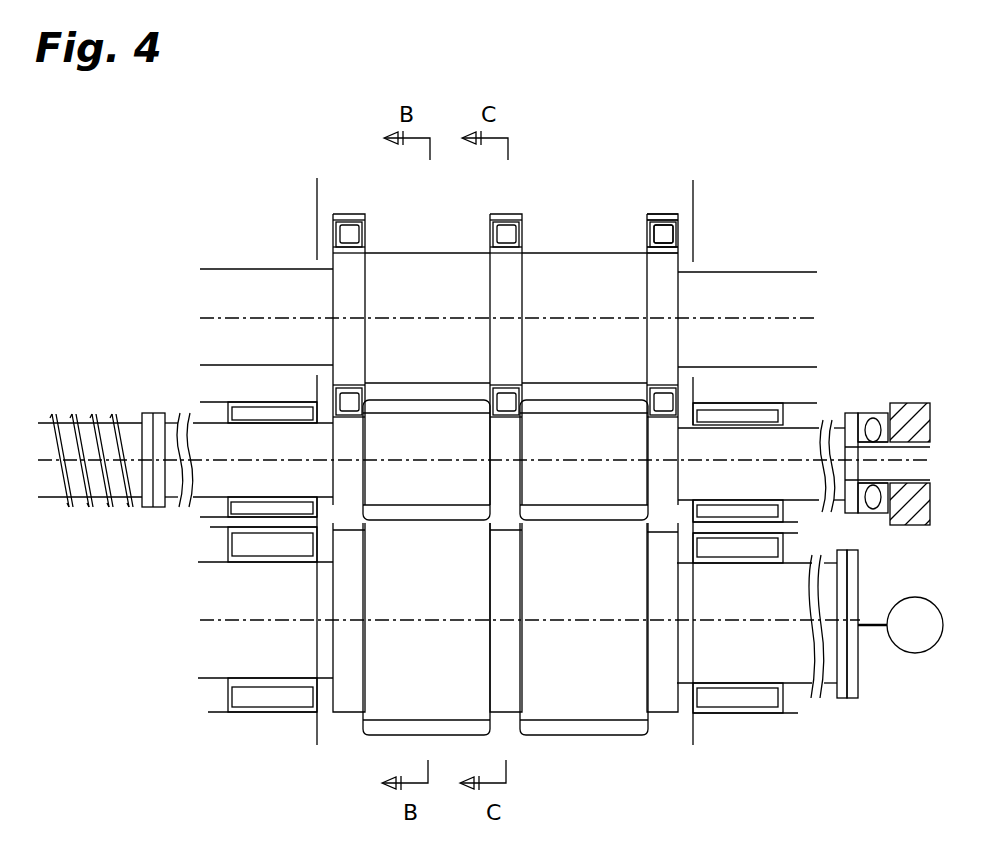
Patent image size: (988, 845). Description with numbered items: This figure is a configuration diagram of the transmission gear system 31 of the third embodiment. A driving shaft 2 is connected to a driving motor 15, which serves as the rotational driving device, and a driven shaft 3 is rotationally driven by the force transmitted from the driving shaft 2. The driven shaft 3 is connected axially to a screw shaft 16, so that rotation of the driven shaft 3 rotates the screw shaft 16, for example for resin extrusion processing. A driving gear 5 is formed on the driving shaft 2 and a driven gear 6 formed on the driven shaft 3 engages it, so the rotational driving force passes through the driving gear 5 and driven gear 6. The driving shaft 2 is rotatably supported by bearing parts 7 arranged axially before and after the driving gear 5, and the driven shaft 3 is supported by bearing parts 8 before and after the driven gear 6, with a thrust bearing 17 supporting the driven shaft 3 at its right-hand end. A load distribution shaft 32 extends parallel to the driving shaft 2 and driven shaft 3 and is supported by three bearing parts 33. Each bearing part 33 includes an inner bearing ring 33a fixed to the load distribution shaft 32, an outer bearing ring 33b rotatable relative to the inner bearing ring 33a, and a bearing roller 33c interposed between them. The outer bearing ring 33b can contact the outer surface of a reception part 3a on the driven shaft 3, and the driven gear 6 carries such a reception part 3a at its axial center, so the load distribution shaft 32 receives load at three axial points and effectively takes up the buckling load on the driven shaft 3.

The driving shaft 2 is at (236, 655).
The driven shaft 3 is at (228, 474).
The reception part 3a is at (352, 415).
The driving gear 5 is at (588, 736).
The driven gear 6 is at (428, 521).
The bearing parts 7 is at (272, 695).
The bearing parts 8 is at (272, 509).
The driving motor 15 is at (917, 653).
The screw shaft 16 is at (88, 412).
The thrust bearing 17 is at (853, 413).
The transmission gear system 31 is at (725, 158).
The load distribution shaft 32 is at (228, 268).
The bearing part 33 is at (372, 233).
The inner bearing ring 33a is at (664, 254).
The outer bearing ring 33b is at (664, 218).
The bearing roller 33c is at (663, 236).